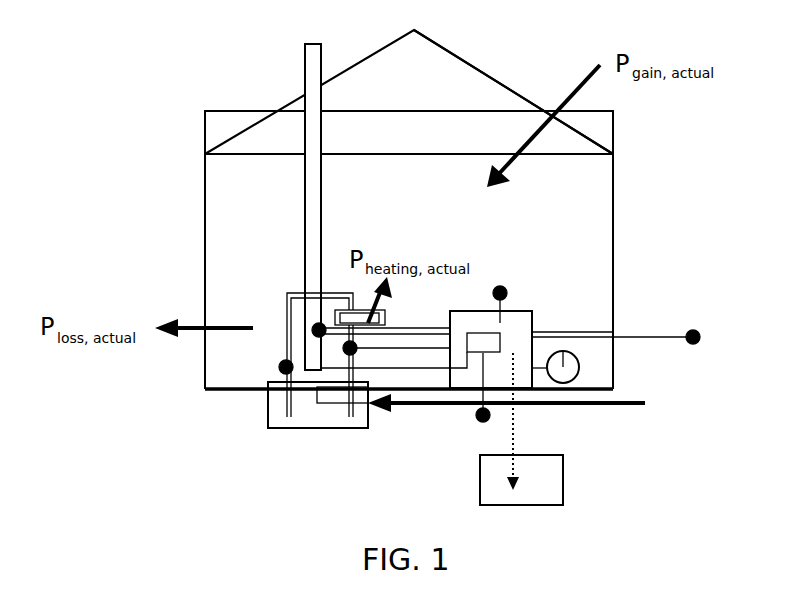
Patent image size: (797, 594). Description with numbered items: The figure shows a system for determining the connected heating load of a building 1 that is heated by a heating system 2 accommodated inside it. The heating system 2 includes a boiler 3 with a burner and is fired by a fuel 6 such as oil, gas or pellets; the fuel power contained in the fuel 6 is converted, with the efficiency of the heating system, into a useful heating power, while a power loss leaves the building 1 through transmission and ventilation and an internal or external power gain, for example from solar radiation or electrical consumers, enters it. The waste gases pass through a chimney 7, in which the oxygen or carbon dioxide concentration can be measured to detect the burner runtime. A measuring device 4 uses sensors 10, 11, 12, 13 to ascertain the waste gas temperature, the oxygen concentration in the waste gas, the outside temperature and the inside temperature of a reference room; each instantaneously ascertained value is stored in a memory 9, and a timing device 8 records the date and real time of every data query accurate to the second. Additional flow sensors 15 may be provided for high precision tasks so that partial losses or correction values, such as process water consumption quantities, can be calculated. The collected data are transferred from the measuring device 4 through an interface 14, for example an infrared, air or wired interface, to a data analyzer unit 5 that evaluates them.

The building 1 is at (240, 146).
The heating system 2 is at (270, 419).
The boiler 3 is at (317, 402).
The measuring device 4 is at (517, 352).
The data analyzer unit 5 is at (513, 467).
The fuel 6 is at (547, 407).
The chimney 7 is at (305, 272).
The timing device 8 is at (579, 368).
The memory 9 is at (483, 380).
The sensor 10 is at (312, 342).
The sensor 11 is at (317, 336).
The sensor 12 is at (635, 342).
The sensor 13 is at (500, 197).
The interface 14 is at (513, 432).
The flow sensor 15 is at (281, 372).